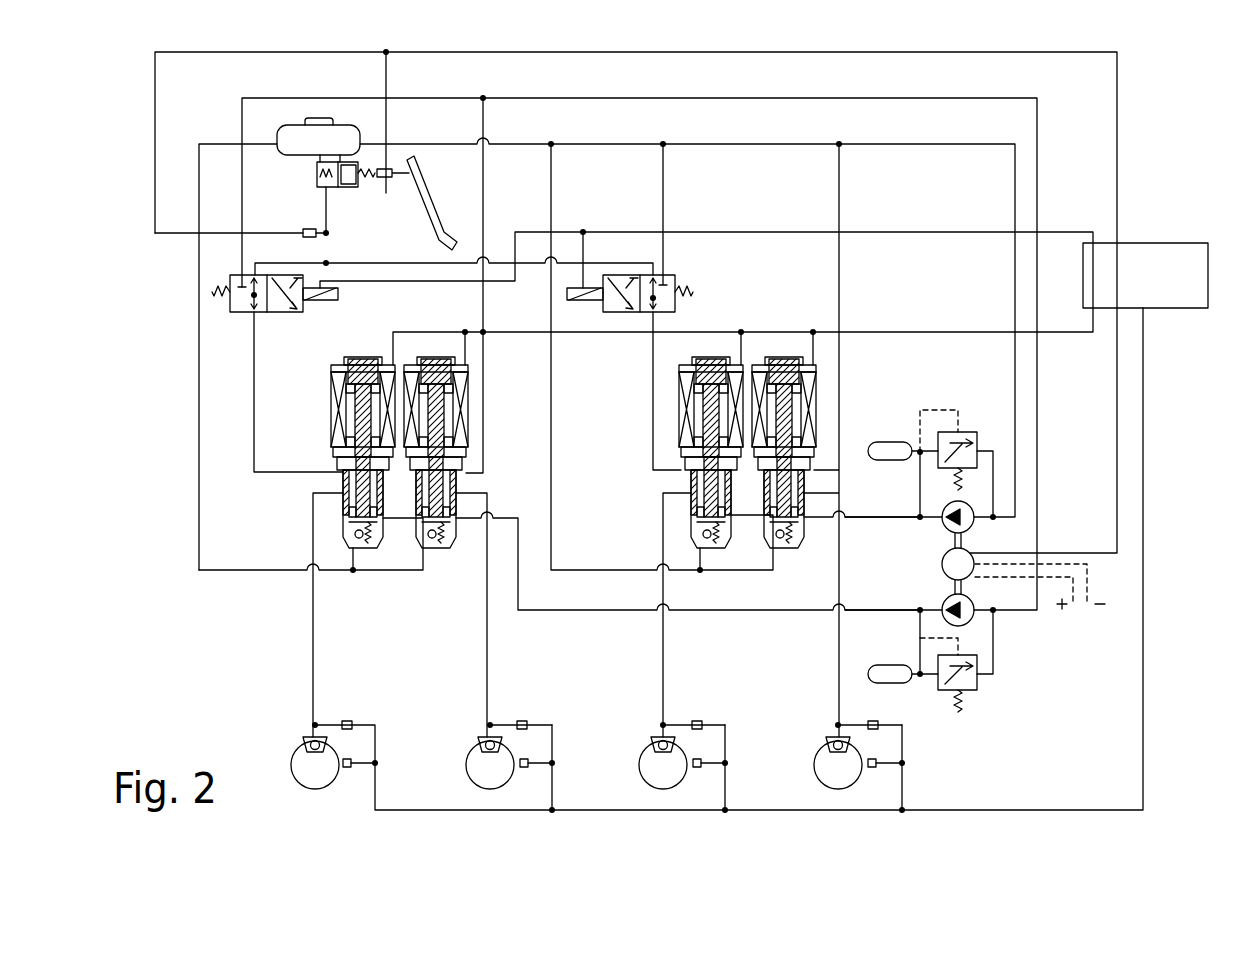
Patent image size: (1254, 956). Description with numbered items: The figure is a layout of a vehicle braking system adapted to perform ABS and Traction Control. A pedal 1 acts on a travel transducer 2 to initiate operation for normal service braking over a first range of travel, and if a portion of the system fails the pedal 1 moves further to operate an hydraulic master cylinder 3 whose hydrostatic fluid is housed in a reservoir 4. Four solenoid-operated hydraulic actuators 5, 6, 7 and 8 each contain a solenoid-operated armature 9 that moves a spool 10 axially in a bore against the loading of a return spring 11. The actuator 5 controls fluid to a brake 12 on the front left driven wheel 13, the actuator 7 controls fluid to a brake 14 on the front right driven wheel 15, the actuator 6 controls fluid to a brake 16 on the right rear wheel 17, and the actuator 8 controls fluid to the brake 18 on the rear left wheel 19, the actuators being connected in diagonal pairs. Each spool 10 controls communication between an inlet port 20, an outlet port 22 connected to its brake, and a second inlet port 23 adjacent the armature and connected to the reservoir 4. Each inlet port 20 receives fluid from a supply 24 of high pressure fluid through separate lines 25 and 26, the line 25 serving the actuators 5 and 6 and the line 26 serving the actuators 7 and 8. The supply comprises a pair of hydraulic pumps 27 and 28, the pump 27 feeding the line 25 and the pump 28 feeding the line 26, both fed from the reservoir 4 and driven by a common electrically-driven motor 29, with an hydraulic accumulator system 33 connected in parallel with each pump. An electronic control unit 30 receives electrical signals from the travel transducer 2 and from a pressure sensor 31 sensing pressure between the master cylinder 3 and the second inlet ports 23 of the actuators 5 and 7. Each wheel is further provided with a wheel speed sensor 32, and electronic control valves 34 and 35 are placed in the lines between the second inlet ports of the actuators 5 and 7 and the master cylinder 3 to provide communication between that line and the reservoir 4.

The pedal 1 is at (424, 200).
The travel transducer 2 is at (386, 193).
The hydraulic master cylinder 3 is at (317, 178).
The reservoir 4 is at (298, 132).
The solenoid-operated hydraulic actuator 5 is at (363, 357).
The solenoid-operated hydraulic actuator 6 is at (437, 357).
The solenoid-operated hydraulic actuator 7 is at (712, 357).
The solenoid-operated hydraulic actuator 8 is at (785, 357).
The solenoid-operated armature 9 is at (358, 392).
The spool 10 is at (370, 548).
The return spring 11 is at (350, 546).
The brake 12 is at (308, 738).
The front left driven wheel 13 is at (305, 783).
The brake 14 is at (658, 738).
The front right driven wheel 15 is at (657, 783).
The brake 16 is at (483, 738).
The right rear wheel 17 is at (480, 783).
The brake 18 is at (835, 738).
The rear left wheel 19 is at (830, 783).
The inlet port 20 is at (345, 520).
The outlet port 22 is at (340, 497).
The second inlet port 23 is at (343, 477).
The supply of high pressure fluid 24 is at (930, 567).
The line 25 is at (900, 612).
The line 26 is at (886, 515).
The hydraulic pump 27 is at (968, 617).
The hydraulic pump 28 is at (965, 520).
The electrically-driven motor 29 is at (975, 556).
The electronic control unit 30 is at (1208, 293).
The pressure sensor 31 is at (300, 230).
The wheel speed sensor 32 is at (347, 768).
The hydraulic accumulator system 33 is at (962, 430).
The electronic control valve 34 is at (232, 302).
The electronic control valve 35 is at (678, 282).